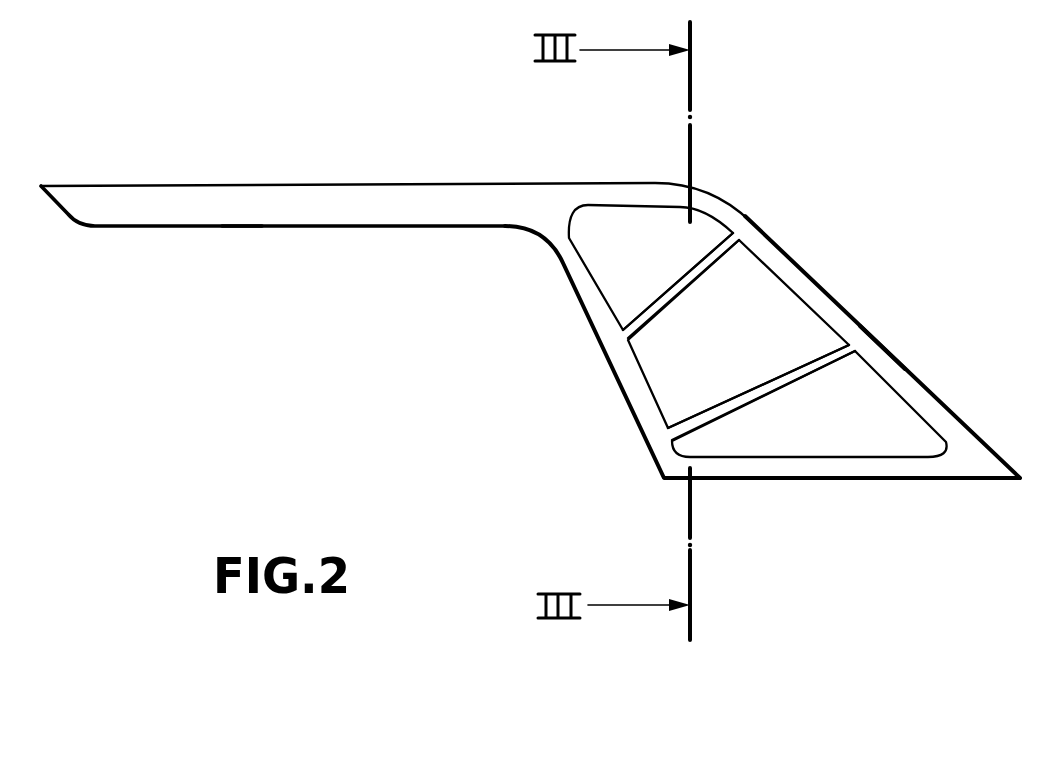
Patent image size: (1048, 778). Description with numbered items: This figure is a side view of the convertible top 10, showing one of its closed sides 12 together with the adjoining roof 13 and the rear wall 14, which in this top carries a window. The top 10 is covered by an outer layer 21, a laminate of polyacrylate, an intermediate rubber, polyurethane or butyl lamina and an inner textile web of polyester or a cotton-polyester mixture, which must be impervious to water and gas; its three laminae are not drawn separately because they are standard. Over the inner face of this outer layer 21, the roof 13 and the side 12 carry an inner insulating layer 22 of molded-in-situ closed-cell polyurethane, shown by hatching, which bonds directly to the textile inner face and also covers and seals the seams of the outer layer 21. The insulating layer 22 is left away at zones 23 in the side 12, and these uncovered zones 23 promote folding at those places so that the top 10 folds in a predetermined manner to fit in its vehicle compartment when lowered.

The convertible top 10 is at (372, 152).
The side 12 is at (807, 292).
The roof 13 is at (172, 197).
The rear wall 14 is at (893, 334).
The outer layer 21 is at (242, 217).
The inner insulating layer 22 is at (627, 270).
The zones 23 is at (703, 262).